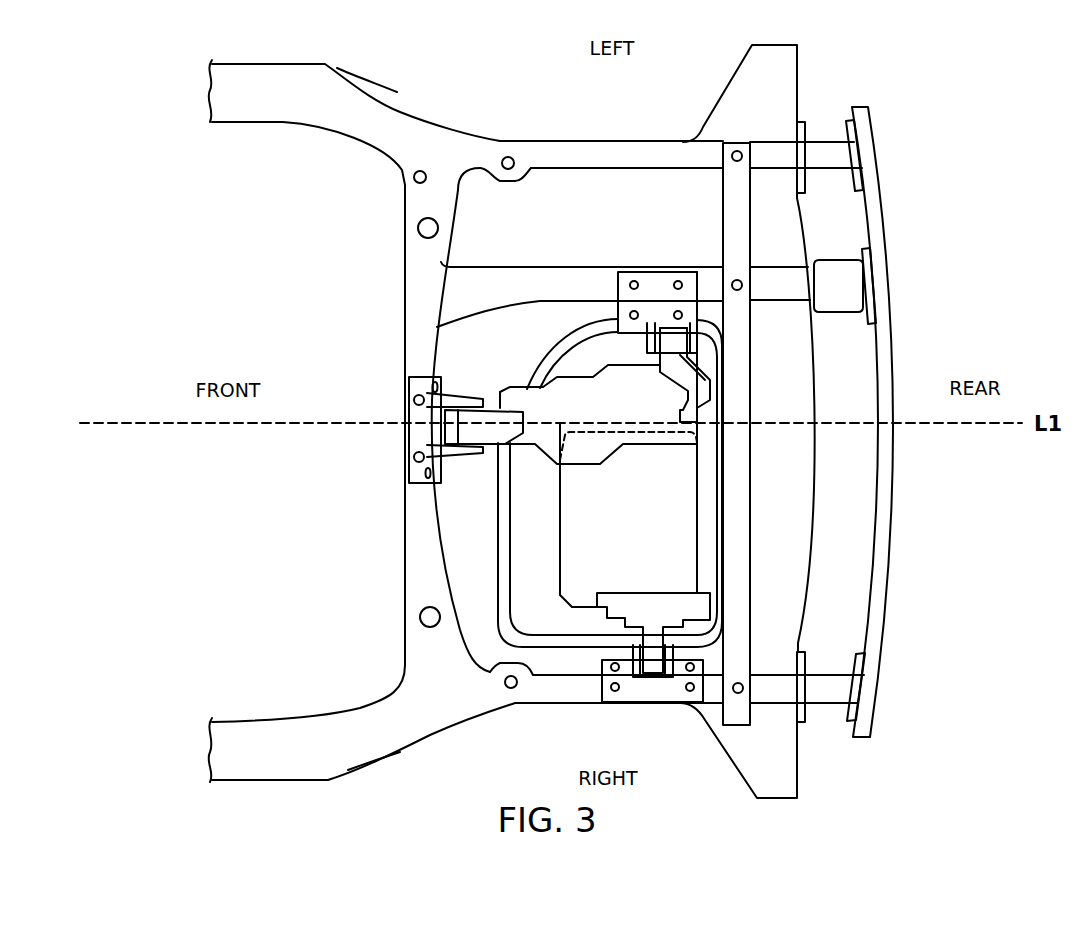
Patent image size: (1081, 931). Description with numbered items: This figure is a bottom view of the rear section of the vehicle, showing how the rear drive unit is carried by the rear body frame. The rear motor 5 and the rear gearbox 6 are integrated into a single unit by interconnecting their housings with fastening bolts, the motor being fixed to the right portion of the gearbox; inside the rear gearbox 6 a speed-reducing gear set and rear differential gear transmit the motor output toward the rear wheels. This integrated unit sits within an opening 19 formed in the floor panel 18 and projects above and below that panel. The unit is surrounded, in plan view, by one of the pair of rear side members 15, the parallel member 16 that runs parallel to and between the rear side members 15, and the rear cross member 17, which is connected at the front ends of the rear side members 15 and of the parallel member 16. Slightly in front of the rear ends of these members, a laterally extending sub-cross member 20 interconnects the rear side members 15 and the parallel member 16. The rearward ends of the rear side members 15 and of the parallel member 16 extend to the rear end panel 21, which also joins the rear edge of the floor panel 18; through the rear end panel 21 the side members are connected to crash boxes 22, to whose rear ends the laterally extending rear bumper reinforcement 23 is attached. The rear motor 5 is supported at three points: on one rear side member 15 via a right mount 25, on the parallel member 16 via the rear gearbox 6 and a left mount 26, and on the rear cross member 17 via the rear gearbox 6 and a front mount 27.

The rear motor 5 is at (573, 547).
The rear gearbox 6 is at (557, 403).
The rear side members 15 is at (612, 155).
The parallel member 16 is at (597, 284).
The rear cross member 17 is at (417, 560).
The floor panel 18 is at (532, 210).
The opening 19 is at (527, 613).
The sub-cross member 20 is at (740, 457).
The rear end panel 21 is at (812, 552).
The crash boxes 22 is at (845, 157).
The rear bumper reinforcement 23 is at (875, 633).
The right mount 25 is at (653, 672).
The left mount 26 is at (668, 336).
The front mount 27 is at (462, 430).